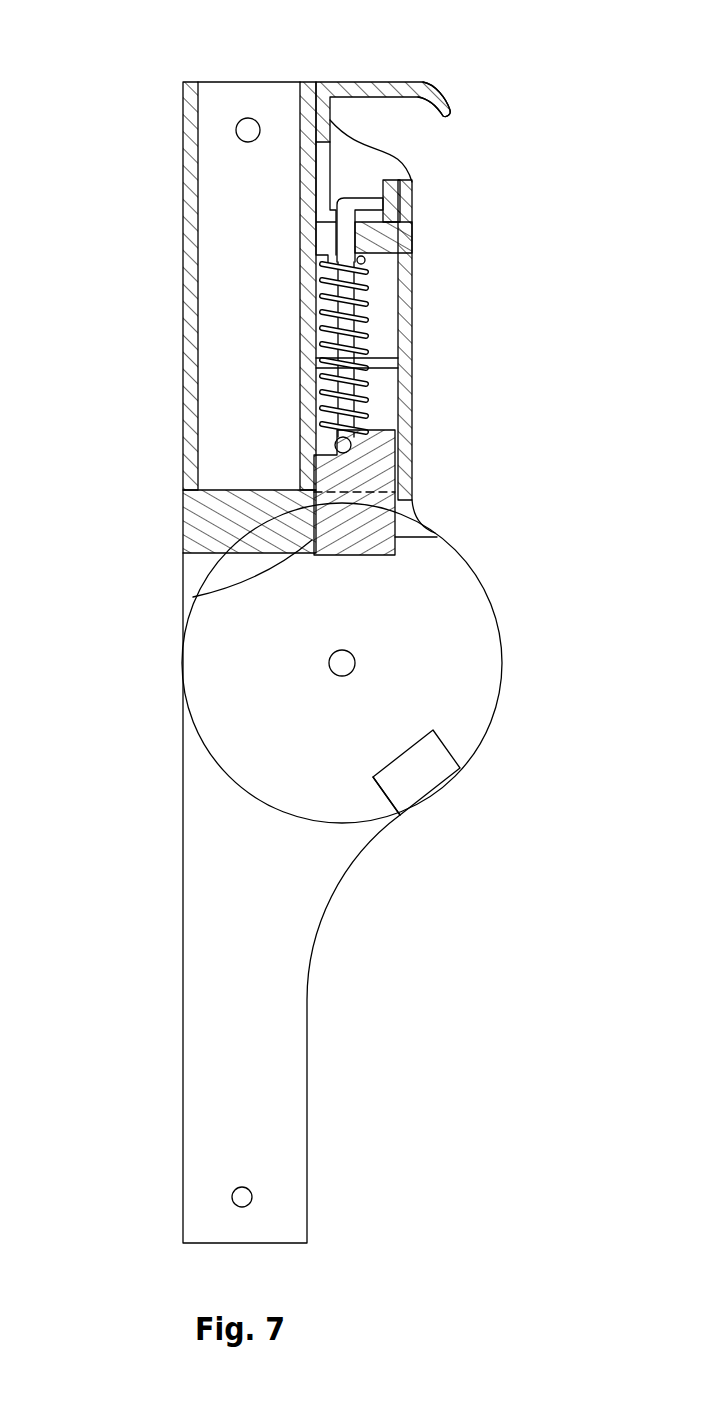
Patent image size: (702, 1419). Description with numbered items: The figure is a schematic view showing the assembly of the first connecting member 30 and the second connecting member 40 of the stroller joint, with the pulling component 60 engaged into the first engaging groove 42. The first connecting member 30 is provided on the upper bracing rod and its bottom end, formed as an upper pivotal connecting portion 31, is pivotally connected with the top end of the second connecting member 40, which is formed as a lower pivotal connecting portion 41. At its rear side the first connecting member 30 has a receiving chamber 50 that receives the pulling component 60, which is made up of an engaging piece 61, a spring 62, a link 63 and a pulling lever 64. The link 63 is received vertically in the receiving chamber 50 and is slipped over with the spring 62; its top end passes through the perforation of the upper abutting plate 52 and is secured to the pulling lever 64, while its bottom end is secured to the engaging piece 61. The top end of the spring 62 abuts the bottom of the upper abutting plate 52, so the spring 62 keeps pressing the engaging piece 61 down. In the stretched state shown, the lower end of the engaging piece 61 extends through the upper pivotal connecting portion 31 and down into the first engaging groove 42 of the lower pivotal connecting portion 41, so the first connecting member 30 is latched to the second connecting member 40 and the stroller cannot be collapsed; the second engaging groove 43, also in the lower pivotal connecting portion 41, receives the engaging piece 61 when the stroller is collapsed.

The first connecting member 30 is at (190, 330).
The upper pivotal connecting portion 31 is at (413, 782).
The second connecting member 40 is at (197, 990).
The lower pivotal connecting portion 41 is at (487, 645).
The first engaging groove 42 is at (220, 594).
The second engaging groove 43 is at (447, 753).
The receiving chamber 50 is at (390, 319).
The upper abutting plate 52 is at (412, 243).
The pulling component 60 is at (372, 72).
The engaging piece 61 is at (437, 533).
The spring 62 is at (365, 381).
The link 63 is at (357, 203).
The pulling lever 64 is at (437, 97).